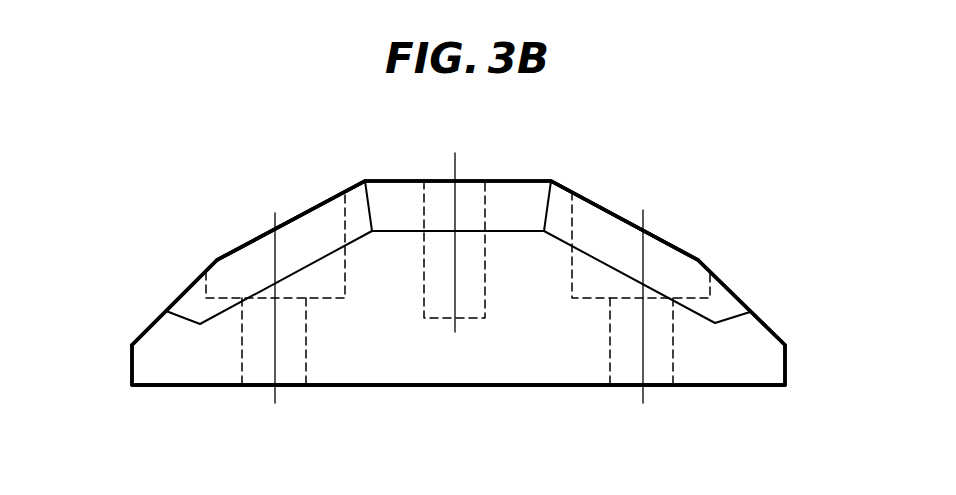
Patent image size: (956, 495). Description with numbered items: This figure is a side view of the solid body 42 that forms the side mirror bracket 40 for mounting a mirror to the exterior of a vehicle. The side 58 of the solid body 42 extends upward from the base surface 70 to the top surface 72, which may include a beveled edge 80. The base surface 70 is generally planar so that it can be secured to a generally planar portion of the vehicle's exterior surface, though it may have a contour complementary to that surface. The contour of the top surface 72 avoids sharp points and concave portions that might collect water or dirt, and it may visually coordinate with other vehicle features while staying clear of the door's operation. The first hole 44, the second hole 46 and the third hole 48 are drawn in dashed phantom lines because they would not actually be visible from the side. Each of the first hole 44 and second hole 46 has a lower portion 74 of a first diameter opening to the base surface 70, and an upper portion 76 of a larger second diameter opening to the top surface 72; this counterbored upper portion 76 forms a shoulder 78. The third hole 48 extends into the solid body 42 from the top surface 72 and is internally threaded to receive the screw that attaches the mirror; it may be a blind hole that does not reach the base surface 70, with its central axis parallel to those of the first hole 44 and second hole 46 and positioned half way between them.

The side mirror bracket 40 is at (210, 150).
The solid body 42 is at (525, 332).
The first hole 44 is at (236, 245).
The second hole 46 is at (695, 248).
The third hole 48 is at (470, 168).
The side 58 is at (540, 370).
The base surface 70 is at (418, 385).
The top surface 72 is at (350, 188).
The lower portion 74 is at (242, 370).
The upper portion 76 is at (343, 225).
The shoulder 78 is at (320, 297).
The beveled edge 80 is at (195, 303).